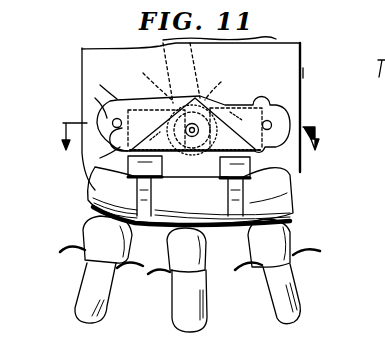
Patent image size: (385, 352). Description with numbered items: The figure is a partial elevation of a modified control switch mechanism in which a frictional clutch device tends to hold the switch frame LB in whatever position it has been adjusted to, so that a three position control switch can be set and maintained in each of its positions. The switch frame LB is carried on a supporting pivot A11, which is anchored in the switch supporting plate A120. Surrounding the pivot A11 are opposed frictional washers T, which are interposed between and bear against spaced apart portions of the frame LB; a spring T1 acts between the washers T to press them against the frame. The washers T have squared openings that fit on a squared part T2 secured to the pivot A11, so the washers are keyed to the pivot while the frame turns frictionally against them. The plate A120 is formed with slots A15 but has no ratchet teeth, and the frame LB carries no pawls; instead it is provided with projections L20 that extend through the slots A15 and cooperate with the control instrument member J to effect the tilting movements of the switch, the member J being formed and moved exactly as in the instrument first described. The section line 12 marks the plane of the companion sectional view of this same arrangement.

The control instrument member J is at (191, 110).
The frictional washers T is at (228, 112).
The spring T1 is at (149, 81).
The squared part T2 is at (181, 176).
The supporting pivot A11 is at (219, 84).
The slots A15 is at (104, 88).
The switch supporting plate A120 is at (303, 73).
The projections L20 is at (96, 99).
The switch frame LB is at (100, 158).
The section line for Fig. 12 is at (195, 133).